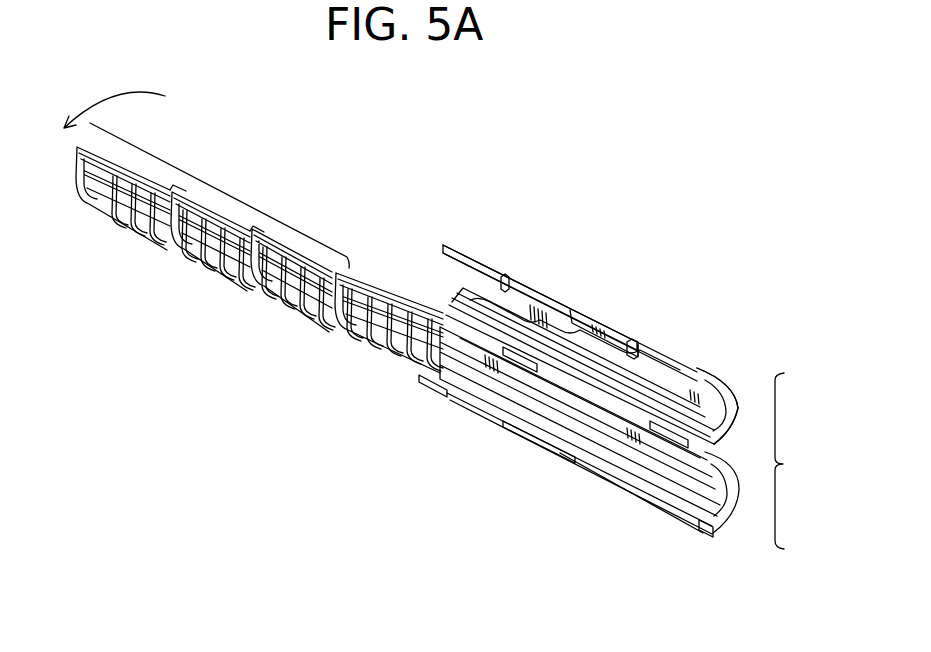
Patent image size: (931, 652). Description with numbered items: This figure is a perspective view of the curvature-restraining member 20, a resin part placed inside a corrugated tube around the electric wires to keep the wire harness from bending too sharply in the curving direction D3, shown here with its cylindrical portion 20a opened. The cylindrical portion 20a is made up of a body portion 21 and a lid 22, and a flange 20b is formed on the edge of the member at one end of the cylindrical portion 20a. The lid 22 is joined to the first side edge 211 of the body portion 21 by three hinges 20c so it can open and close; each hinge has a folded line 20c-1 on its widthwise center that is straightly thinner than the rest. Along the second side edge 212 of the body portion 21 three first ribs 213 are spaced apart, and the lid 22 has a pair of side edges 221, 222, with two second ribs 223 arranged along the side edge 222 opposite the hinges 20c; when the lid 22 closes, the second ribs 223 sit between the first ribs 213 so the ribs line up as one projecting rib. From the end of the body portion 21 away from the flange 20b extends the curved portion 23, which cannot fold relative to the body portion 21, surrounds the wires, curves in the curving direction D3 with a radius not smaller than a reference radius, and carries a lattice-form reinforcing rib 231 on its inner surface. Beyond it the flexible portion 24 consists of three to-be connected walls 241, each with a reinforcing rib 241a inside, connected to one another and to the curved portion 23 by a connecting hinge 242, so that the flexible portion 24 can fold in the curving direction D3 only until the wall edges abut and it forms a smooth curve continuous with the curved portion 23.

The curvature-restraining member 20 is at (350, 137).
The cylindrical portion 20a is at (799, 461).
The flange 20b is at (740, 418).
The hinges 20c is at (497, 315).
The folded line 20c-1 is at (480, 350).
The body portion 21 is at (710, 527).
The first side edge 211 is at (617, 427).
The second side edge 212 is at (607, 477).
The first ribs 213 is at (430, 390).
The lid 22 is at (727, 367).
The side edge 221 is at (553, 300).
The side edge 222 is at (648, 375).
The second ribs 223 is at (498, 278).
The curved portion 23 is at (388, 288).
The reinforcing rib 231 is at (355, 350).
The flexible portion 24 is at (218, 190).
The to-be connected walls 241 is at (143, 270).
The reinforcing rib 241a is at (124, 235).
The connecting hinge 242 is at (156, 250).
The curving direction D3 is at (114, 98).